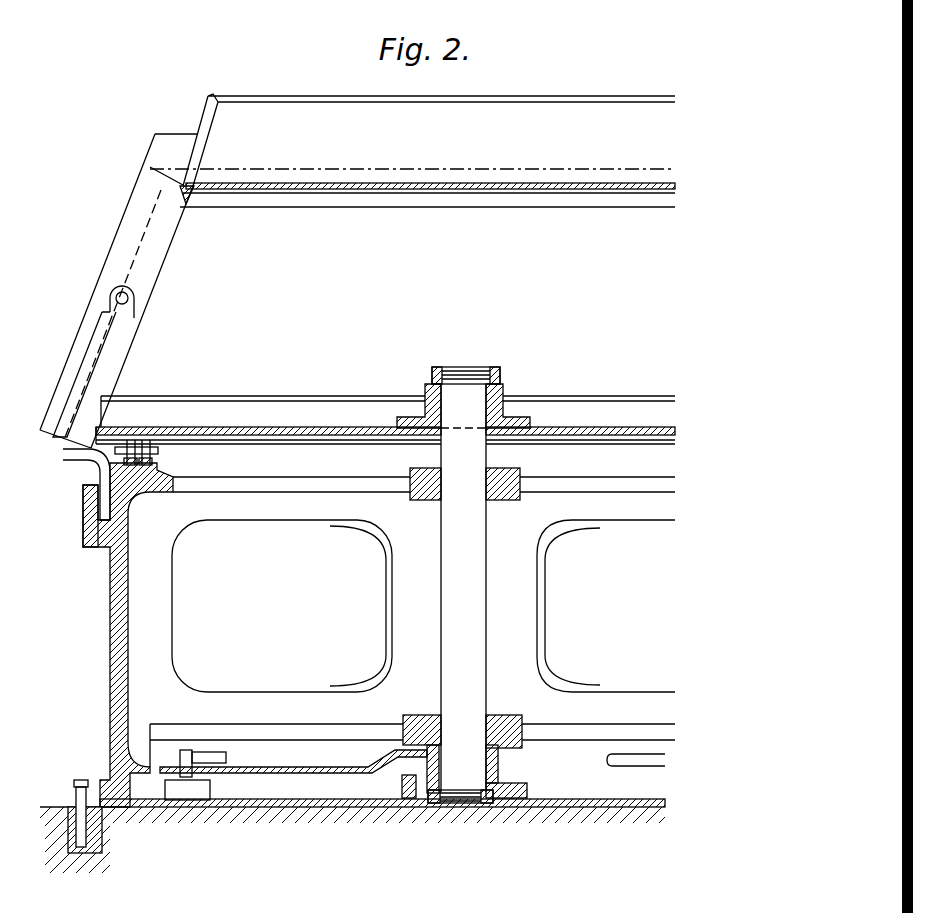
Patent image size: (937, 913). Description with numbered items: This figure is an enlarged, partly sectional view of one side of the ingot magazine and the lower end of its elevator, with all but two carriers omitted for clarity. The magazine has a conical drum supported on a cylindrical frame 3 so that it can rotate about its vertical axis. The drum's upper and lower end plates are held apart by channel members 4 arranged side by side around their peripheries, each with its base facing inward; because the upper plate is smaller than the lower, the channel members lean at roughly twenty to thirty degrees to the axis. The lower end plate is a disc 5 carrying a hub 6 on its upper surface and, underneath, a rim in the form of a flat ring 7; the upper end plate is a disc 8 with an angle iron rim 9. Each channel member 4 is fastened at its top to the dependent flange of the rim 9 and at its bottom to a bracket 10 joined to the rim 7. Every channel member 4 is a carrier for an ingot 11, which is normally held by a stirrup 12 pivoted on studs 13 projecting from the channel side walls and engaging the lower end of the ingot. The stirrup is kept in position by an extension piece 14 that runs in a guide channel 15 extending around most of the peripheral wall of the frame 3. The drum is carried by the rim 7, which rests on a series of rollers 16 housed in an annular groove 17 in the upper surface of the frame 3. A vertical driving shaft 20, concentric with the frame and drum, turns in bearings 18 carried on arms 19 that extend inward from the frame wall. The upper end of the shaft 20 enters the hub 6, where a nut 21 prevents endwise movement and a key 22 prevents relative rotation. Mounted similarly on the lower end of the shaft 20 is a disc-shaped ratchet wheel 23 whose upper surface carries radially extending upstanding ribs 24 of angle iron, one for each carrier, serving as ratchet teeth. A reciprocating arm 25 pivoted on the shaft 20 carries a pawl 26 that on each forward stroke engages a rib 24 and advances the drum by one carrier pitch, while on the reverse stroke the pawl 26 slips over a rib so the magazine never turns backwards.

The cylindrical frame 3 is at (115, 630).
The channel member 4 is at (140, 233).
The disc 5 is at (222, 427).
The hub 6 is at (503, 395).
The flat ring rim 7 is at (121, 432).
The disc 8 is at (420, 190).
The angle iron rim 9 is at (617, 203).
The bracket 10 is at (103, 395).
The ingot 11 is at (182, 158).
The stirrup 12 is at (93, 353).
The stud 13 is at (128, 296).
The extension piece 14 is at (103, 512).
The guide channel 15 is at (86, 495).
The roller 16 is at (146, 466).
The annular groove 17 is at (155, 432).
The bearing 18 is at (495, 502).
The arm 19 is at (272, 480).
The vertical driving shaft 20 is at (465, 600).
The nut 21 is at (487, 368).
The key 22 is at (425, 387).
The ratchet wheel 23 is at (533, 798).
The rib 24 is at (200, 787).
The reciprocating arm 25 is at (343, 773).
The pawl 26 is at (182, 772).